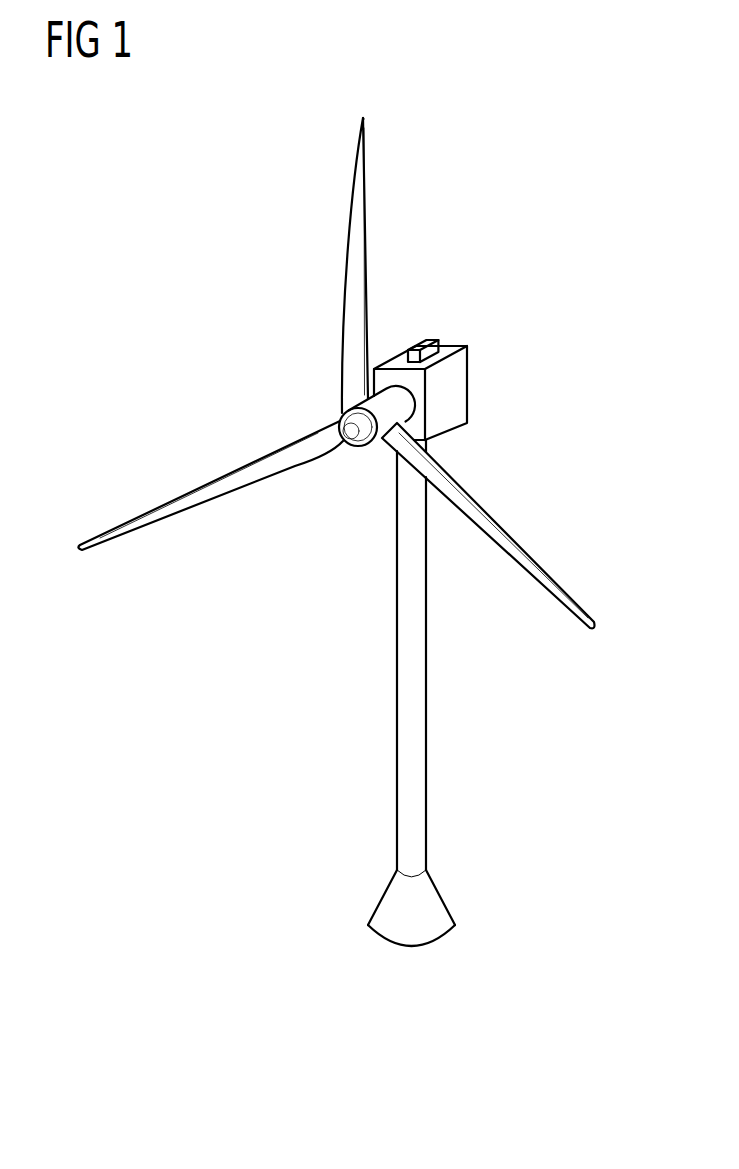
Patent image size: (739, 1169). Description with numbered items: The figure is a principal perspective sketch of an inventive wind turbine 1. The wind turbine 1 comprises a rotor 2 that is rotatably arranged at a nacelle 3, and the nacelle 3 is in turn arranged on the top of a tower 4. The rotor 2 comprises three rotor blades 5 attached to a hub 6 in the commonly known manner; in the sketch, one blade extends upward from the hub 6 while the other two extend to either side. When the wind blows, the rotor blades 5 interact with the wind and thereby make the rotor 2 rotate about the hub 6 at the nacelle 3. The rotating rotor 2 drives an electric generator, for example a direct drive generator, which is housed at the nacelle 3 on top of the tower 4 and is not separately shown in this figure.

The wind turbine 1 is at (190, 278).
The rotor 2 is at (193, 484).
The nacelle 3 is at (455, 393).
The tower 4 is at (417, 818).
The rotor blades 5 is at (357, 275).
The hub 6 is at (400, 412).